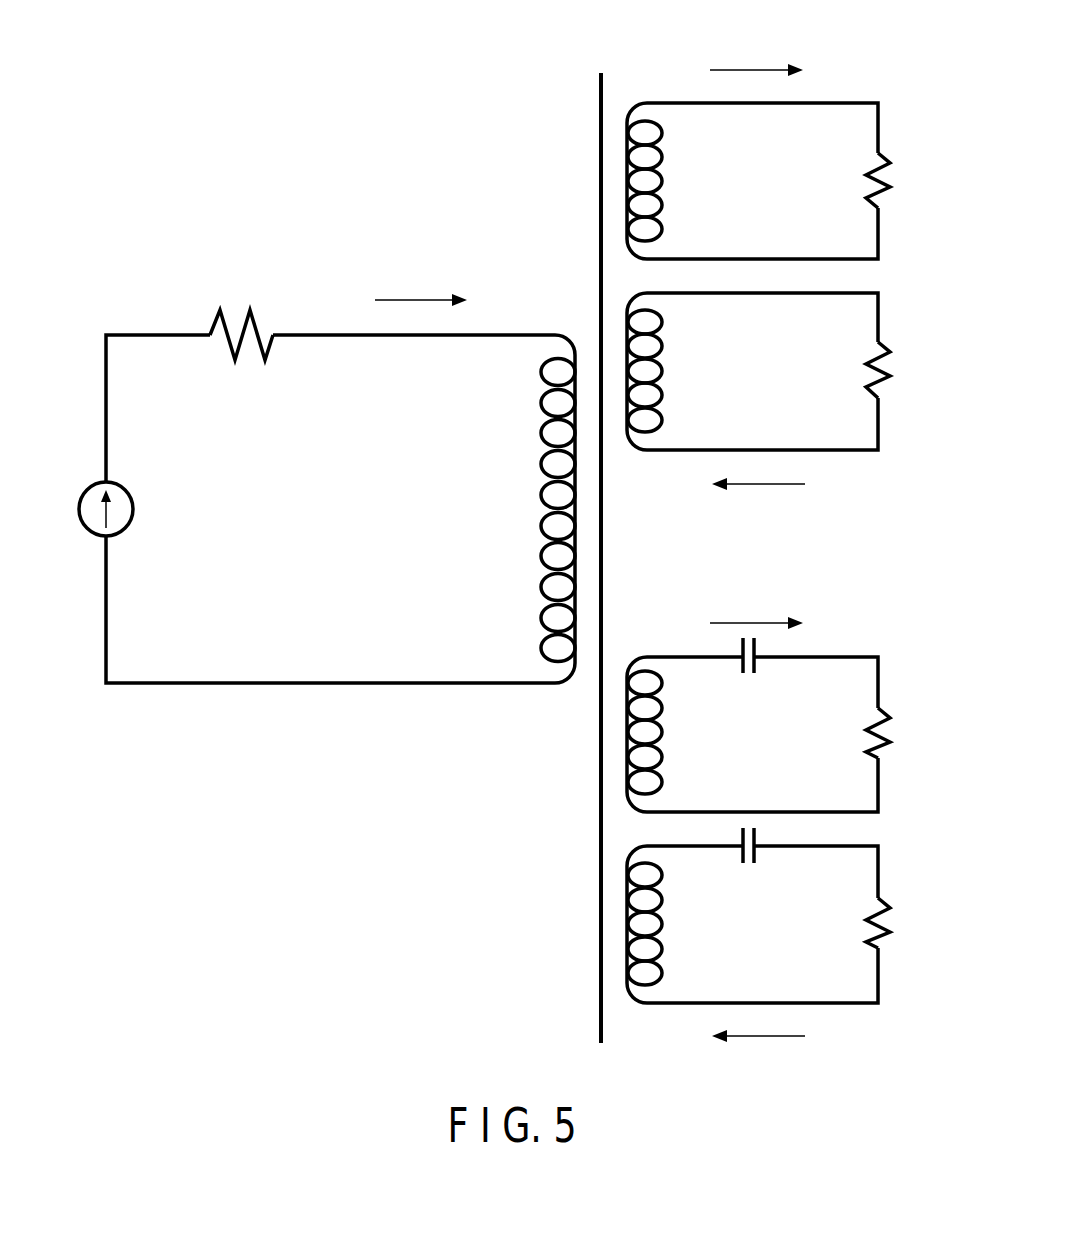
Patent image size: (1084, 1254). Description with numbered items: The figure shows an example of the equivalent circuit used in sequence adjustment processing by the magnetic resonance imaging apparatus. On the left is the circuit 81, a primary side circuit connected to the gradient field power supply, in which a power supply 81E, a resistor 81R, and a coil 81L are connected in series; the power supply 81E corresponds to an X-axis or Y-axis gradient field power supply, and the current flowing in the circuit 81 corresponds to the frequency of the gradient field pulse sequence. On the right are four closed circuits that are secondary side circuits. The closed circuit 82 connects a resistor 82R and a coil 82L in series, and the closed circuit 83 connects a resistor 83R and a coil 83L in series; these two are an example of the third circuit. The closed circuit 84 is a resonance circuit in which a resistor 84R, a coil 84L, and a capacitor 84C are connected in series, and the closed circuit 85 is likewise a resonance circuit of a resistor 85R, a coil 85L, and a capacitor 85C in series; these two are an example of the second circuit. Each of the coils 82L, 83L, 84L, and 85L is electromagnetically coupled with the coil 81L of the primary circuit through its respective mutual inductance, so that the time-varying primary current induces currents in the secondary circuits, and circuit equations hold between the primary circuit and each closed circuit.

The circuit 81 is at (308, 465).
The power supply 81E is at (92, 489).
The resistor 81R is at (268, 360).
The coil 81L is at (540, 527).
The closed circuit 82 is at (779, 143).
The resistor 82R is at (878, 154).
The coil 82L is at (662, 228).
The closed circuit 83 is at (789, 406).
The resistor 83R is at (878, 343).
The coil 83L is at (662, 419).
The closed circuit 84 is at (779, 693).
The capacitor 84C is at (757, 668).
The resistor 84R is at (878, 709).
The coil 84L is at (662, 781).
The closed circuit 85 is at (789, 951).
The capacitor 85C is at (757, 858).
The resistor 85R is at (878, 899).
The coil 85L is at (662, 972).